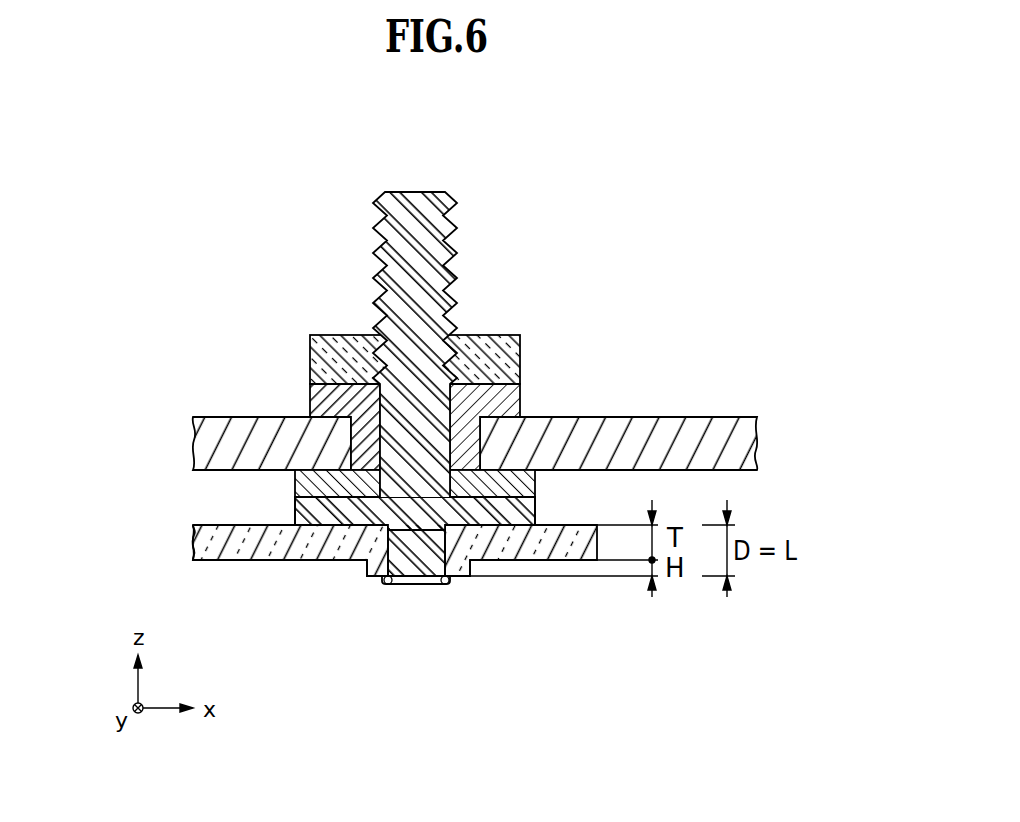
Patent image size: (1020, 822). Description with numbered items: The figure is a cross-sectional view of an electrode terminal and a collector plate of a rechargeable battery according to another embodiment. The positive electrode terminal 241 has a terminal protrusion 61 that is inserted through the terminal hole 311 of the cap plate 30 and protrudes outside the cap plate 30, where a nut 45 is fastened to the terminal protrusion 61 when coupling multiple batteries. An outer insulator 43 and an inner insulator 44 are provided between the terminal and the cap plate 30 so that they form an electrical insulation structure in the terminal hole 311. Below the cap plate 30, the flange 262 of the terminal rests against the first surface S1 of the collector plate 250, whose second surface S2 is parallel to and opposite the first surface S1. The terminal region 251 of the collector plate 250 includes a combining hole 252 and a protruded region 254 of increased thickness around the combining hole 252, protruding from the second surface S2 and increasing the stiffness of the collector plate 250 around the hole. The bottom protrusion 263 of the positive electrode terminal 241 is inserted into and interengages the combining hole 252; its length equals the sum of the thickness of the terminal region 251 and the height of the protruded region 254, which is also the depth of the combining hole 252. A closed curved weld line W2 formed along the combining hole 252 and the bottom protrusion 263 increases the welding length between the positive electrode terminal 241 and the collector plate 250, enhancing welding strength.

The positive electrode terminal 241 is at (432, 452).
The terminal protrusion 61 is at (390, 253).
The nut 45 is at (330, 357).
The outer insulator 43 is at (318, 397).
The terminal hole 311 is at (482, 440).
The cap plate 30 is at (475, 407).
The first surface S1 is at (227, 525).
The collector plate 250 is at (343, 609).
The second surface S2 is at (227, 560).
The terminal region 251 is at (270, 547).
The inner insulator 44 is at (317, 482).
The protruded region 254 is at (366, 569).
The combining hole 252 is at (388, 547).
The bottom protrusion 263 is at (422, 550).
The closed curved weld line W2 is at (450, 584).
The flange 262 is at (513, 510).